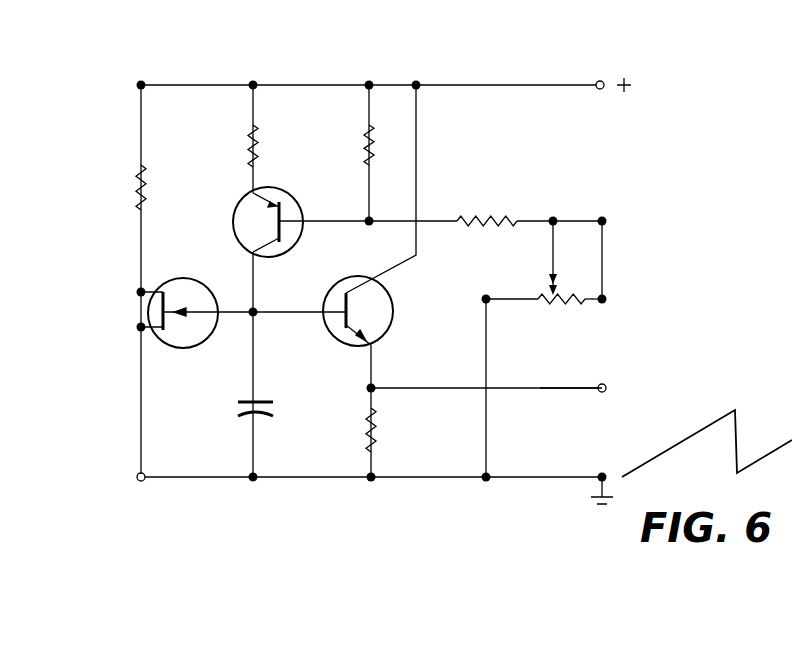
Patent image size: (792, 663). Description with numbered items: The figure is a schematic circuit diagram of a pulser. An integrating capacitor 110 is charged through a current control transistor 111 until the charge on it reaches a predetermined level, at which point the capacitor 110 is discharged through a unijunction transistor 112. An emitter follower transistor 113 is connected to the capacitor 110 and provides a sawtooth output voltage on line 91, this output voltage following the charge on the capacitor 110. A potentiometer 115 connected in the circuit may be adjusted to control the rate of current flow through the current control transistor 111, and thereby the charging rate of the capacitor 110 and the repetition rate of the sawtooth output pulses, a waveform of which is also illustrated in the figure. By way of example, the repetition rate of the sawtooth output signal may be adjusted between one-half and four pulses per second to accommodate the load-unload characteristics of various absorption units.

The line 91 is at (552, 386).
The integrating capacitor 110 is at (237, 408).
The current control transistor 111 is at (287, 192).
The unijunction transistor 112 is at (185, 278).
The emitter follower transistor 113 is at (387, 329).
The potentiometer 115 is at (560, 306).